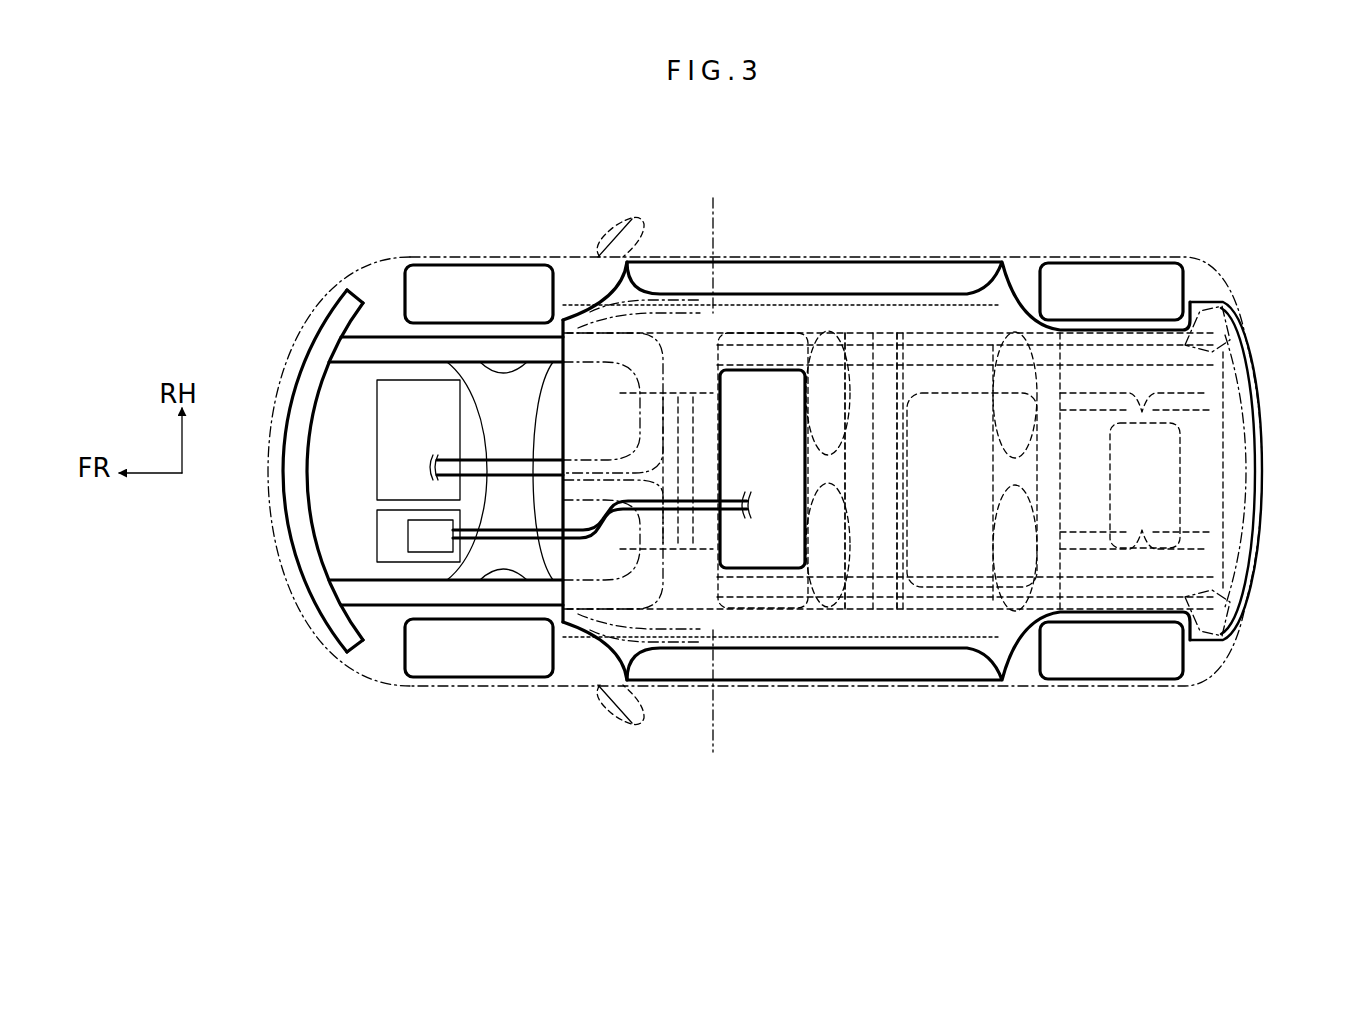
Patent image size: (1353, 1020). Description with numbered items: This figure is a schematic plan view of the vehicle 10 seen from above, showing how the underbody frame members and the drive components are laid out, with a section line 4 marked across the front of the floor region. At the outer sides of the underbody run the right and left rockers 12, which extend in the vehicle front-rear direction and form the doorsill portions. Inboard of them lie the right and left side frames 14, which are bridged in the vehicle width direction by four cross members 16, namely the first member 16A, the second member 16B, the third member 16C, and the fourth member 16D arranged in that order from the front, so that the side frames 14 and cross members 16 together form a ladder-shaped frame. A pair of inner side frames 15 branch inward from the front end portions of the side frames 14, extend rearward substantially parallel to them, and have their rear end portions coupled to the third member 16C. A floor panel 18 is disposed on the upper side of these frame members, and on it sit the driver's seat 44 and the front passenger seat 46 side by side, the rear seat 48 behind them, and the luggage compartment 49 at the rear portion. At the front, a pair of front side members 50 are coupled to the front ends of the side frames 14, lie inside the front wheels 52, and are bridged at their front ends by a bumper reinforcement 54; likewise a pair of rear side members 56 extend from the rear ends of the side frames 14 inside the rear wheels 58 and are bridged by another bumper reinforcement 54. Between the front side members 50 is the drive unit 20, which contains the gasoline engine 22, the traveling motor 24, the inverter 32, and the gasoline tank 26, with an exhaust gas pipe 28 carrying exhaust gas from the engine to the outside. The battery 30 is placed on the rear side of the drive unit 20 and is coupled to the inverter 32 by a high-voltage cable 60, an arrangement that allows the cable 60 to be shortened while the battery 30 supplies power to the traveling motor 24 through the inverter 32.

The section line IV 4 is at (711, 207).
The vehicle 10 is at (360, 728).
The rockers 12 is at (893, 258).
The side frames 14 is at (640, 290).
The inner side frames 15 is at (595, 312).
The cross members 16 is at (893, 166).
The first member 16A is at (718, 333).
The second member 16B is at (843, 333).
The third member 16C is at (927, 360).
The fourth member 16D is at (1000, 345).
The floor panel 18 is at (595, 305).
The drive unit 20 is at (328, 452).
The gasoline engine 22 is at (388, 403).
The traveling motor 24 is at (390, 527).
The gasoline tank 26 is at (948, 560).
The exhaust gas pipe 28 is at (515, 460).
The battery 30 is at (760, 565).
The inverter 32 is at (407, 538).
The driver's seat 44 is at (862, 372).
The front passenger seat 46 is at (853, 585).
The rear seat 48 is at (975, 605).
The luggage compartment 49 is at (1189, 489).
The front side members 50 is at (407, 343).
The front wheels 52 is at (478, 273).
The bumper reinforcement 54 is at (320, 320).
The rear side members 56 is at (1185, 345).
The rear wheels 58 is at (1117, 270).
The high-voltage cable 60 is at (510, 530).